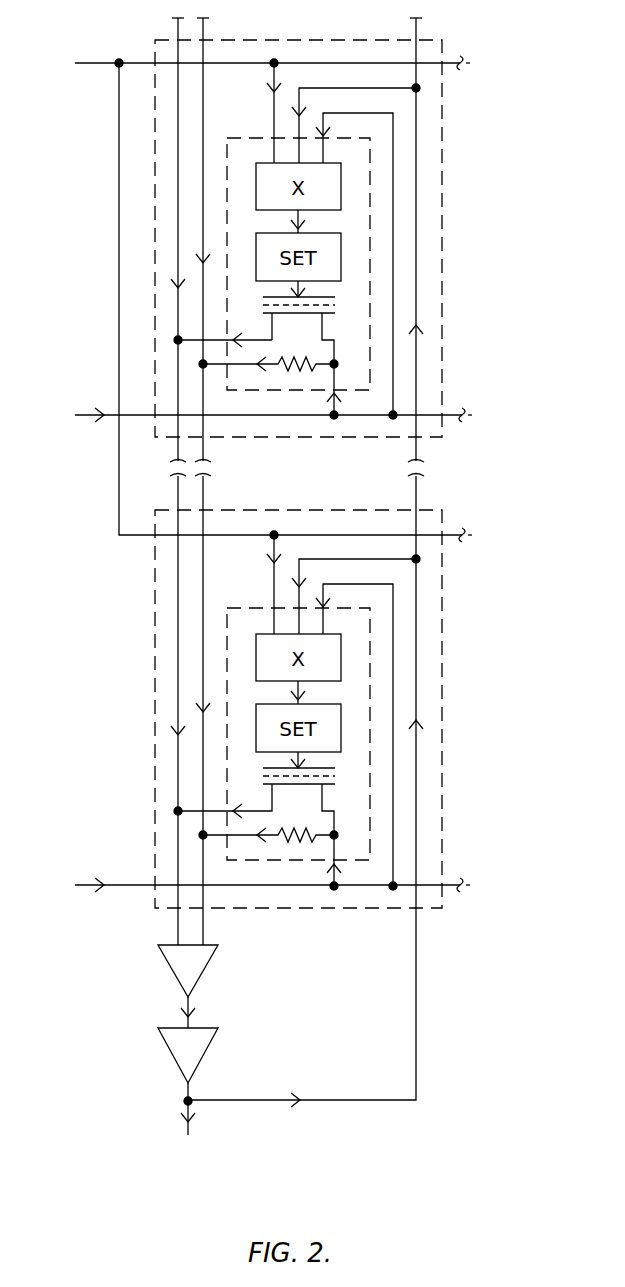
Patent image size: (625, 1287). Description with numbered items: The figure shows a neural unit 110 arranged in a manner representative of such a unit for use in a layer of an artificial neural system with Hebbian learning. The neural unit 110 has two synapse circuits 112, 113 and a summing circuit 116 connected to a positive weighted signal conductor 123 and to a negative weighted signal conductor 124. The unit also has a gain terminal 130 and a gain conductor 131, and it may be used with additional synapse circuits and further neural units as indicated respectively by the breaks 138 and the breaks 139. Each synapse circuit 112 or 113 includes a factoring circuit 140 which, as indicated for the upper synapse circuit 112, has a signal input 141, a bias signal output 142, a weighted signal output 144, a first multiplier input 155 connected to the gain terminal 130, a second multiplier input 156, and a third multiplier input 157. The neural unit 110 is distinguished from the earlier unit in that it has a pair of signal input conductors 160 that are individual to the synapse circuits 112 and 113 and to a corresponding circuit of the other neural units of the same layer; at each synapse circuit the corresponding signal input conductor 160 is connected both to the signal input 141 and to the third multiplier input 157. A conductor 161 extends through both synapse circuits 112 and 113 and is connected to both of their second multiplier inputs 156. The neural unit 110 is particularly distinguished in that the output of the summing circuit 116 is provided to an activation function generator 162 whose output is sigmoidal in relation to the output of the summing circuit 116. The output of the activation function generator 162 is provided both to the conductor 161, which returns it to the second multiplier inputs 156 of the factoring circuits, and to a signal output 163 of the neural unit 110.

The neural unit 110 is at (320, 1128).
The synapse circuit 112 is at (156, 40).
The synapse circuit 113 is at (432, 912).
The summing circuit 116 is at (168, 967).
The positive weighted signal conductor 123 is at (178, 675).
The negative weighted signal conductor 124 is at (203, 735).
The gain terminal 130 is at (81, 81).
The gain conductor 131 is at (119, 505).
The breaks 138 is at (186, 468).
The breaks 139 is at (467, 68).
The factoring circuit 140 is at (372, 172).
The signal input 141 is at (345, 397).
The bias signal output 142 is at (212, 366).
The weighted signal output 144 is at (210, 340).
The first multiplier input 155 is at (272, 118).
The second multiplier input 156 is at (296, 125).
The third multiplier input 157 is at (323, 150).
The signal input conductor 160 is at (112, 417).
The conductor 161 is at (418, 1098).
The activation function generator 162 is at (168, 1050).
The signal output 163 is at (188, 1125).